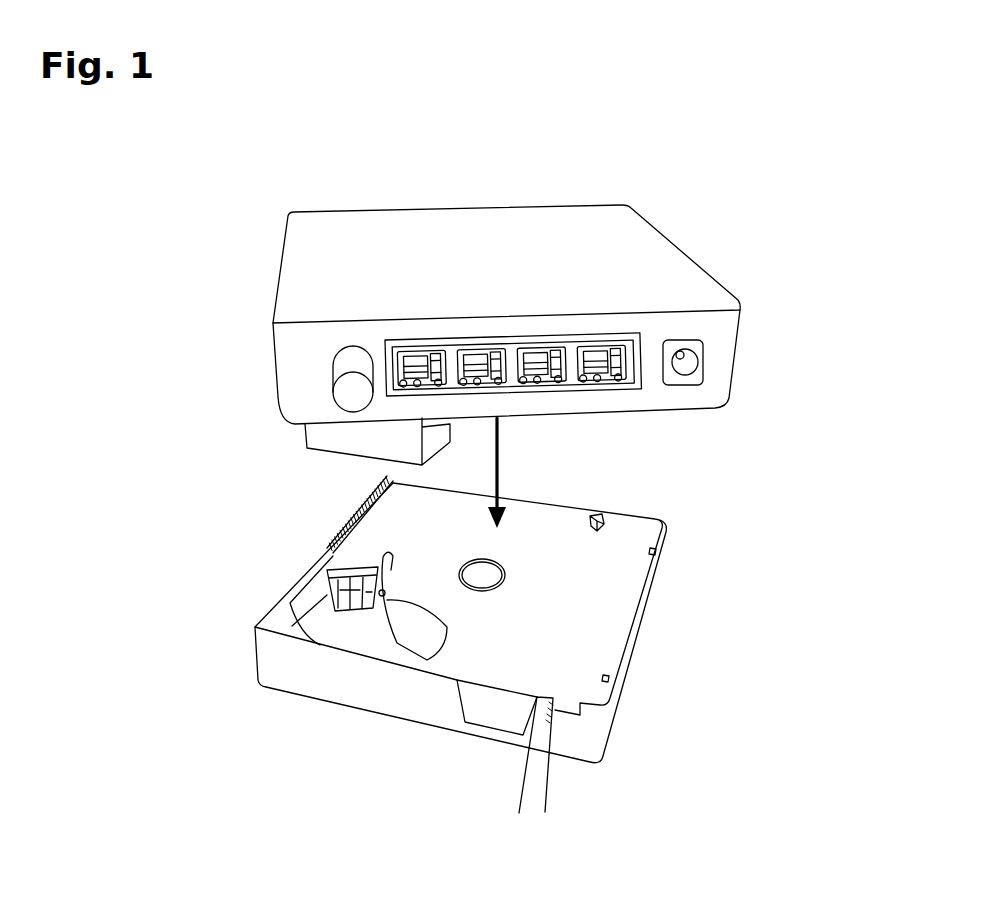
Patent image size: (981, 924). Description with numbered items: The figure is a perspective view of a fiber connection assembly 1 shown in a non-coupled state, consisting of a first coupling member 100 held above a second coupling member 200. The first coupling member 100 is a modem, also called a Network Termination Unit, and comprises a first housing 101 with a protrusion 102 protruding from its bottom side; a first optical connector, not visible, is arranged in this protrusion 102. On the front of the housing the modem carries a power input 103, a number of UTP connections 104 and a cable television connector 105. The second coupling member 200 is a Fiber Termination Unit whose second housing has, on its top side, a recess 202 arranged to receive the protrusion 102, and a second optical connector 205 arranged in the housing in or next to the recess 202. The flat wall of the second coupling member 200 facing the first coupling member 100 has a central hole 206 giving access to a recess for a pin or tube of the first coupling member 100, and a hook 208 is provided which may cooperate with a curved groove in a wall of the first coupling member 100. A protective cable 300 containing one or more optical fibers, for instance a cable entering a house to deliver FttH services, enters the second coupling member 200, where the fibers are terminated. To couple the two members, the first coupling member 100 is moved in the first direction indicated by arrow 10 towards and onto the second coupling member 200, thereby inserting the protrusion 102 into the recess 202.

The fiber connection assembly 1 is at (686, 126).
The arrow 10 is at (497, 468).
The first coupling member 100 is at (250, 248).
The first housing 101 is at (437, 207).
The protrusion 102 is at (322, 447).
The power input 103 is at (705, 365).
The UTP connections 104 is at (519, 338).
The cable television connector 105 is at (355, 350).
The second coupling member 200 is at (268, 568).
The recess 202 is at (369, 624).
The second optical connector 205 is at (355, 612).
The central hole 206 is at (488, 591).
The hook 208 is at (596, 516).
The protective cable 300 is at (545, 810).